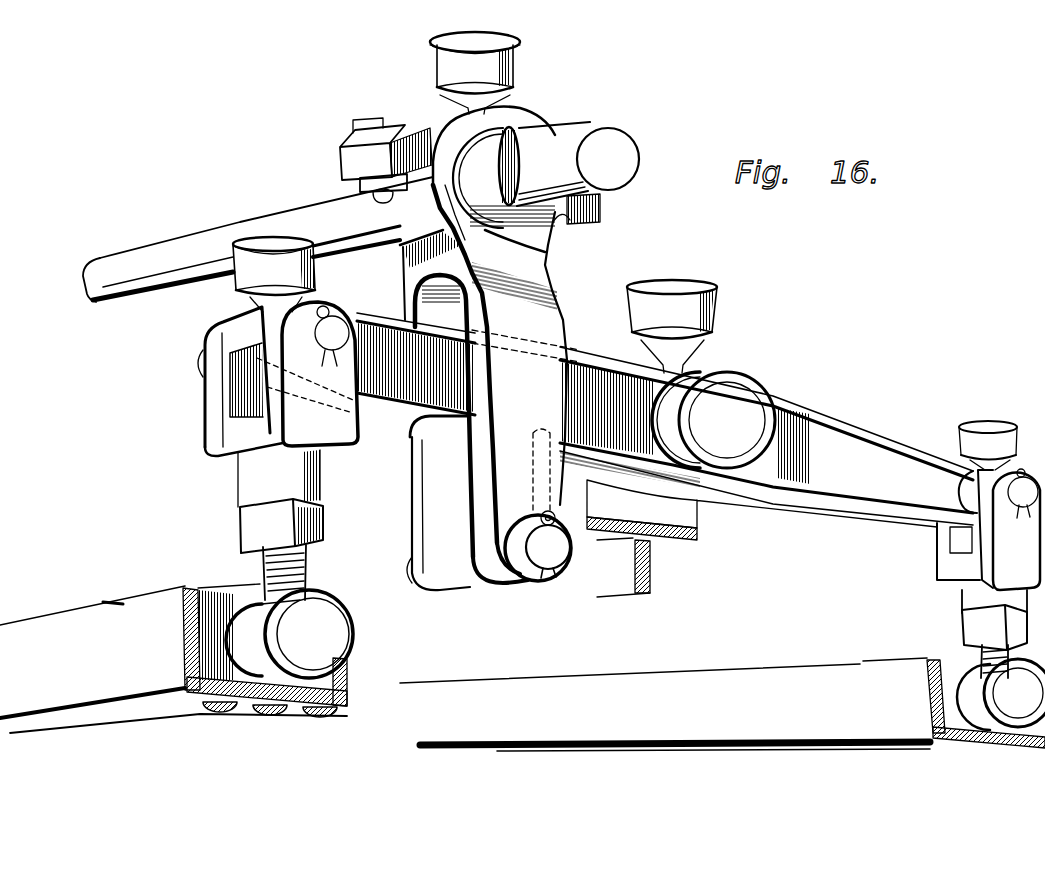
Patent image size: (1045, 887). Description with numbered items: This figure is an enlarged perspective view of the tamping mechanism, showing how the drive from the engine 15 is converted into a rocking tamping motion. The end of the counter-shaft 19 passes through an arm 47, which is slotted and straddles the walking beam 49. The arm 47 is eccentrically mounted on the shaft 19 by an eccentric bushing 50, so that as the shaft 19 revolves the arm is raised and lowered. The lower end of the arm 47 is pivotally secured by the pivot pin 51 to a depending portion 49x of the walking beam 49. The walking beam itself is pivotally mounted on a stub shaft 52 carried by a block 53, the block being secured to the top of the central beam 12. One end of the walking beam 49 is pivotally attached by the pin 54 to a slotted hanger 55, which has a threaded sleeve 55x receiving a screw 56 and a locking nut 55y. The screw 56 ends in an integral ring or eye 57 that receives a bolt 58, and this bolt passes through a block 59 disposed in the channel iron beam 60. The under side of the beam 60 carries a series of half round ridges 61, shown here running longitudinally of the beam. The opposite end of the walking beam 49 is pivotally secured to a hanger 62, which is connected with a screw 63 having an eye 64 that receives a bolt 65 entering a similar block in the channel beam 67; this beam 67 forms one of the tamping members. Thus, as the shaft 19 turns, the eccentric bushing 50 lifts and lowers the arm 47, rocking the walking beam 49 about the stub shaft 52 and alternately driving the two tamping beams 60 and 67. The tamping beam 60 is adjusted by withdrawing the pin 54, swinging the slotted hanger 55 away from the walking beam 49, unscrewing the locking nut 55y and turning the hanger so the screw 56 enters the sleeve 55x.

The central beam 12 is at (651, 569).
The engine 15 is at (412, 272).
The counter-shaft 19 is at (276, 220).
The arm 47 is at (530, 287).
The walking beam 49 is at (813, 443).
The depending portion 49x is at (411, 503).
The eccentric bushing 50 is at (550, 133).
The pivot pin 51 is at (563, 558).
The stub shaft 52 is at (730, 400).
The block 53 is at (677, 512).
The pin 54 is at (291, 274).
The slotted hanger 55 is at (227, 423).
The threaded sleeve 55x is at (238, 503).
The locking nut 55y is at (243, 513).
The screw 56 is at (941, 657).
The eye 57 is at (250, 703).
The bolt 58 is at (340, 630).
The block 59 is at (193, 588).
The channel iron beam 60 is at (173, 659).
The half round ridges 61 is at (320, 717).
The hanger 62 is at (999, 549).
The screw 63 is at (928, 687).
The eye 64 is at (980, 723).
The bolt 65 is at (1033, 713).
The channel beam 67 is at (917, 717).